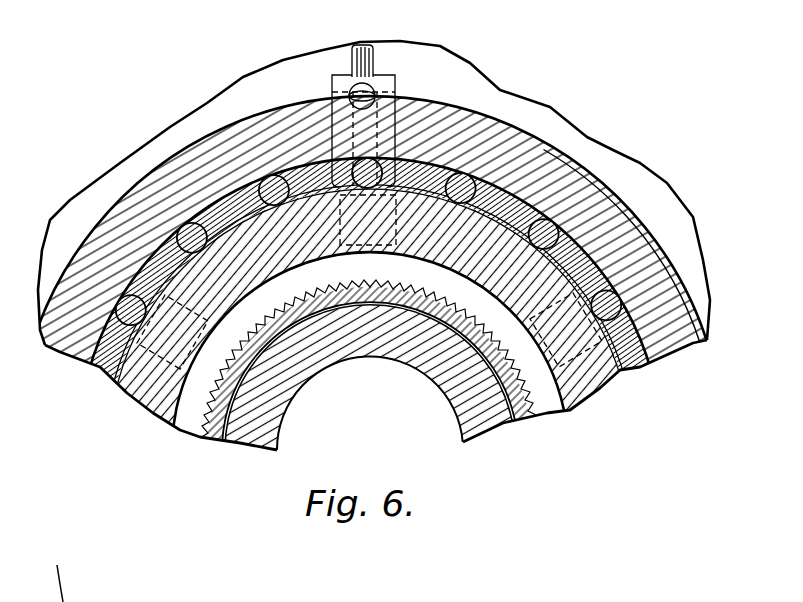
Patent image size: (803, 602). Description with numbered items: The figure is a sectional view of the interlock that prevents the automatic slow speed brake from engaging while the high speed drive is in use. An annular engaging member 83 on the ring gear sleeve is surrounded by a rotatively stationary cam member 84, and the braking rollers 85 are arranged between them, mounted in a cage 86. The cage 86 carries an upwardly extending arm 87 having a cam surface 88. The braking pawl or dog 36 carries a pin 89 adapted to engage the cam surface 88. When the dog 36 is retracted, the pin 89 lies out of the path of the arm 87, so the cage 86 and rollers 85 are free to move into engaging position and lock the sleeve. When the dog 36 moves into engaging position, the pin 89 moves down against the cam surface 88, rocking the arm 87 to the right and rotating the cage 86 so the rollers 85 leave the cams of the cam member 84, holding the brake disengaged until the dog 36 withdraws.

The braking pawl 36 is at (333, 78).
The annular engaging member 83 is at (500, 132).
The cam member 84 is at (590, 227).
The braking rollers 85 is at (273, 190).
The cage 86 is at (505, 205).
The arm 87 is at (393, 98).
The cam surface 88 is at (353, 102).
The pin 89 is at (352, 80).